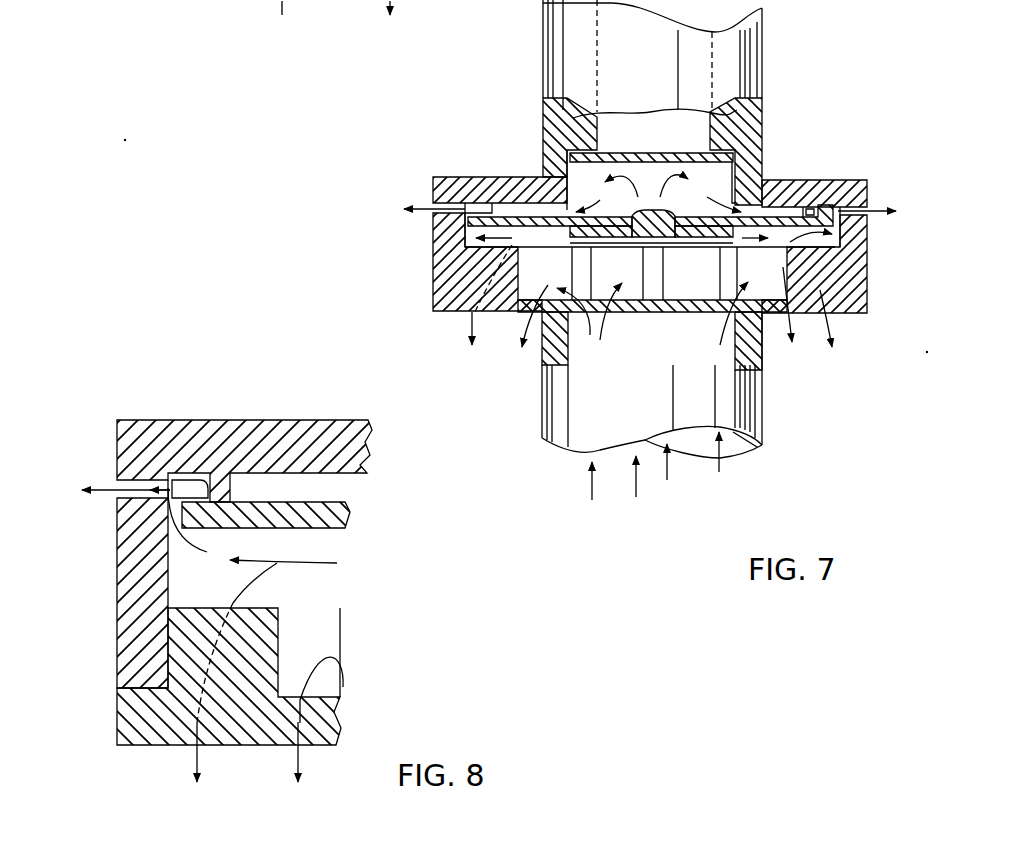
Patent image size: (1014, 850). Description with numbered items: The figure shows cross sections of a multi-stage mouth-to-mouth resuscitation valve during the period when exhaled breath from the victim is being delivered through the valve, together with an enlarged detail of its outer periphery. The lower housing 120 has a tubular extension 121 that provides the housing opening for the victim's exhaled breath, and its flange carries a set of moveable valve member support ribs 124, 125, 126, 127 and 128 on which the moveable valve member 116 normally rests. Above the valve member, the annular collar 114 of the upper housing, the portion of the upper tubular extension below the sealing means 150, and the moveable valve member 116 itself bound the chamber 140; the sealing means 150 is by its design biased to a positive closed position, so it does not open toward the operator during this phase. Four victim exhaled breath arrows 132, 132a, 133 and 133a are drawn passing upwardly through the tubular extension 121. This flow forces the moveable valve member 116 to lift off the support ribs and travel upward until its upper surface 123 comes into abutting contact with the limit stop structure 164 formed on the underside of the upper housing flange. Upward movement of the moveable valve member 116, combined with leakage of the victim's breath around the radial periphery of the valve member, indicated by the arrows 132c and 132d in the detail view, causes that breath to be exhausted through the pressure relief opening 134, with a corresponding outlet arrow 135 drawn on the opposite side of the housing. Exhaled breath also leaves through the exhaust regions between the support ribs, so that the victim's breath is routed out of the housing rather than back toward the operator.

In FIG. 8, the annular collar 114 is at (117, 543).
In FIG. 7, the moveable valve member 116 is at (520, 215).
In FIG. 8, the moveable valve member 116 is at (290, 503).
In FIG. 7, the lower housing 120 is at (786, 374).
In FIG. 7, the tubular extension 121 is at (540, 370).
In FIG. 7, the upper surface 123 is at (553, 214).
In FIG. 7, the moveable valve member support rib 124 is at (838, 264).
In FIG. 7, the moveable valve member support rib 125 is at (763, 317).
In FIG. 7, the moveable valve member support rib 126 is at (653, 300).
In FIG. 7, the moveable valve member support rib 127 is at (613, 300).
In FIG. 7, the moveable valve member support rib 128 is at (467, 270).
In FIG. 7, the victim exhaled breath arrow 132 is at (636, 497).
In FIG. 8, the victim exhaled breath arrow 132 is at (277, 563).
In FIG. 7, the victim exhaled breath arrow 132a is at (592, 497).
In FIG. 8, the victim exhaled breath arrow 132a is at (343, 687).
In FIG. 8, the exhaled breath leakage arrow 132c is at (205, 552).
In FIG. 8, the exhaled breath leakage arrow 132d is at (107, 483).
In FIG. 7, the victim exhaled breath arrow 133 is at (667, 480).
In FIG. 7, the victim exhaled breath arrow 133a is at (719, 468).
In FIG. 7, the pressure relief opening 134 is at (880, 200).
In FIG. 7, the left outlet 135 is at (423, 200).
In FIG. 7, the chamber 140 is at (718, 192).
In FIG. 7, the sealing means 150 is at (650, 150).
In FIG. 7, the limit stop structure 164 is at (800, 210).
In FIG. 8, the limit stop structure 164 is at (210, 478).